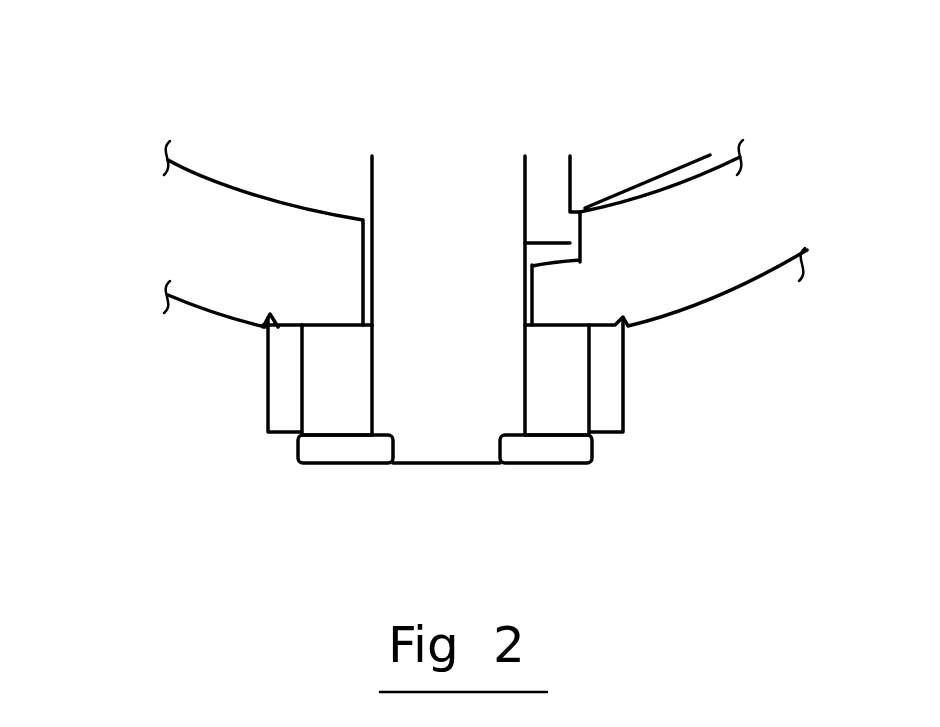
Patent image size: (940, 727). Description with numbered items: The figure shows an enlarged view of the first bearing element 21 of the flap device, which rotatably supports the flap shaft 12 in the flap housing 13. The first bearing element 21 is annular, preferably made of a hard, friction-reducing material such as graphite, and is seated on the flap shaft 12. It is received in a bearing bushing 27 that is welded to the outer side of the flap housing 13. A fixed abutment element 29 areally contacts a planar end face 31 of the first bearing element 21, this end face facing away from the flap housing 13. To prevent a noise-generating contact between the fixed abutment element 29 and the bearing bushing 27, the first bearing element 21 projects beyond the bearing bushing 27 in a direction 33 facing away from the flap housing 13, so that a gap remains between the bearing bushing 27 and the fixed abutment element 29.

The flap shaft 12 is at (407, 223).
The flap housing 13 is at (703, 280).
The first bearing element 21 is at (560, 373).
The bearing bushing 27 is at (281, 371).
The fixed abutment element 29 is at (547, 451).
The planar end face 31 is at (581, 450).
The direction 33 is at (216, 457).